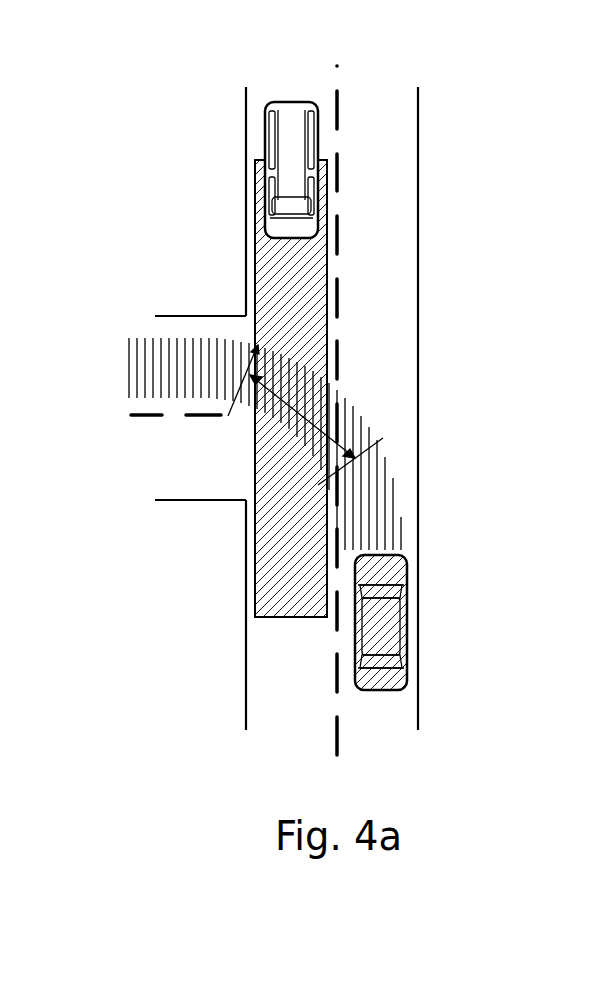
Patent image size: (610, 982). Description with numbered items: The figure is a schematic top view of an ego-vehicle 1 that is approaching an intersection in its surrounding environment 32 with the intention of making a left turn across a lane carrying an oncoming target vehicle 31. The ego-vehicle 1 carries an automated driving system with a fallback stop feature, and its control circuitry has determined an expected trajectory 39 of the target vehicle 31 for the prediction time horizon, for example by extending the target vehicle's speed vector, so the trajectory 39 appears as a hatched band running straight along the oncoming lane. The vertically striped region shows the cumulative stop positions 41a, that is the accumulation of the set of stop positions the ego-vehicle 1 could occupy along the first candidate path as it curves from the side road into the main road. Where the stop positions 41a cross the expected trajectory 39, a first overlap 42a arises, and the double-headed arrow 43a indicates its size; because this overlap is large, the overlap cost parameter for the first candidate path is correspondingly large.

The ego-vehicle 1 is at (407, 620).
The target vehicle 31 is at (318, 139).
The surrounding environment 32 is at (448, 169).
The expected trajectory 39 is at (272, 586).
The cumulative stop positions for the first candidate path 41a is at (399, 452).
The first overlap 42a is at (315, 398).
The double-headed arrow 43a is at (290, 408).